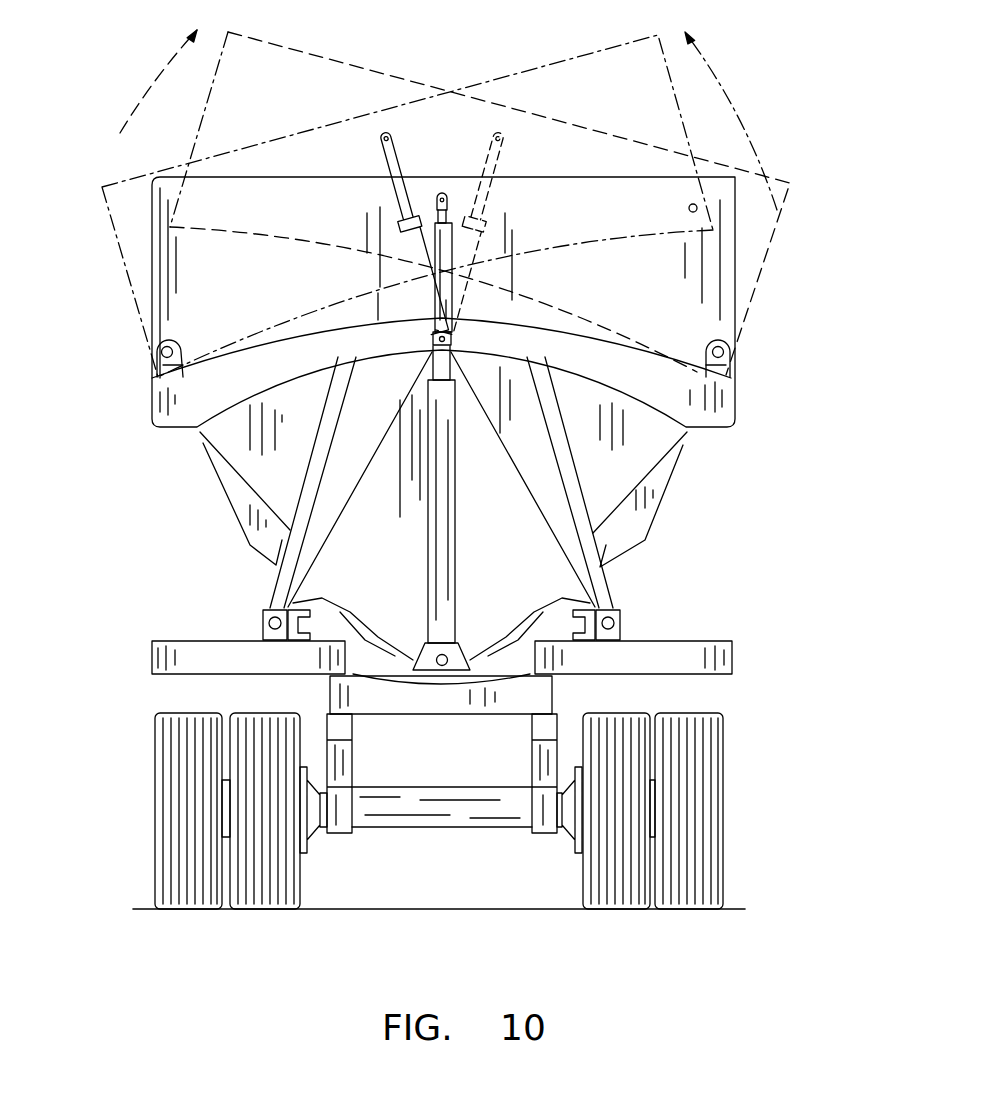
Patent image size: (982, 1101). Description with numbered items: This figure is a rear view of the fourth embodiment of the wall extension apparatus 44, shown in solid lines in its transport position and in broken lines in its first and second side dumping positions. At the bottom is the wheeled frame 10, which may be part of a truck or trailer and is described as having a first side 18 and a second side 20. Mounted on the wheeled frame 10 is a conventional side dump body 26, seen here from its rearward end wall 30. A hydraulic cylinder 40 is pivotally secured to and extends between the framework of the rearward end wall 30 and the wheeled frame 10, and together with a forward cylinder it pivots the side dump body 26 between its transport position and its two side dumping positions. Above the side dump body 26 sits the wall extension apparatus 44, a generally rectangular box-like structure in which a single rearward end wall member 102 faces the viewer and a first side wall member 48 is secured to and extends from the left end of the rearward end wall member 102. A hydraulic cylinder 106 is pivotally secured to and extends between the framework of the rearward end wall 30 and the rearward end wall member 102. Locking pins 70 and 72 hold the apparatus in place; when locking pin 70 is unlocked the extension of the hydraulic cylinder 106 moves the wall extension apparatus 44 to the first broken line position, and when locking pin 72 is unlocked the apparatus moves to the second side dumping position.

The wheeled frame 10 is at (720, 590).
The first side 18 is at (165, 612).
The second side 20 is at (760, 630).
The side dump body 26 is at (690, 513).
The rearward end wall 30 is at (528, 533).
The hydraulic cylinder 40 is at (437, 547).
The wall extension apparatus 44 is at (782, 158).
The first side wall member 48 is at (152, 238).
The locking pin 70 is at (163, 357).
The locking pin 72 is at (707, 360).
The rearward end wall member 102 is at (195, 313).
The hydraulic cylinder 106 is at (453, 265).